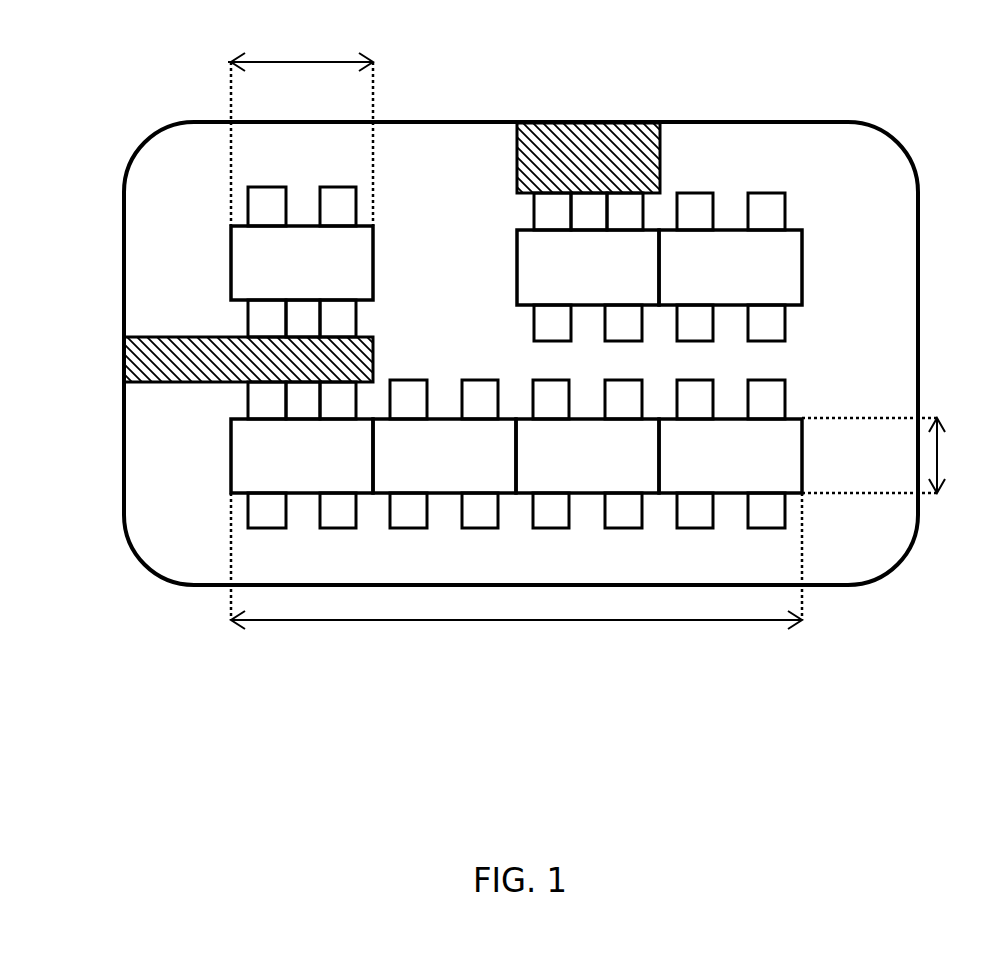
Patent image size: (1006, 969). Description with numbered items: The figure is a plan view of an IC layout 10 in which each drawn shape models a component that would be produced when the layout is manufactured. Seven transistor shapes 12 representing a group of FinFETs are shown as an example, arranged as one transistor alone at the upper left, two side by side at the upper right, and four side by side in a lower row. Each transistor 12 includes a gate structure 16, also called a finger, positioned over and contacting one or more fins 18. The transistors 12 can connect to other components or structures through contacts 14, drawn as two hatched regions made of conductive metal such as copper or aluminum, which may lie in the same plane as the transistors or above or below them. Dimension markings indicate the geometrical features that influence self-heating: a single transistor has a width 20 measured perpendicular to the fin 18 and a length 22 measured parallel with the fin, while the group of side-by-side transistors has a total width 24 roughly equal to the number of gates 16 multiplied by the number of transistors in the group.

The IC layout 10 is at (108, 132).
The transistor 12 is at (231, 273).
The contact 14 is at (617, 123).
The gate structure 16 is at (515, 361).
The fin 18 is at (268, 187).
The width 20 is at (300, 61).
The length 22 is at (940, 429).
The total width 24 is at (457, 622).